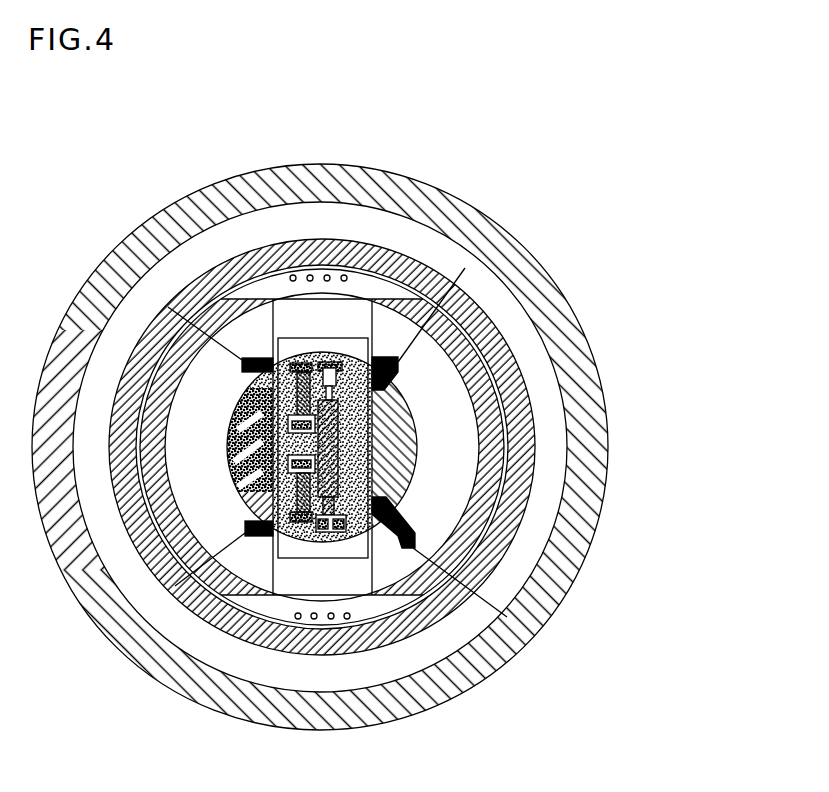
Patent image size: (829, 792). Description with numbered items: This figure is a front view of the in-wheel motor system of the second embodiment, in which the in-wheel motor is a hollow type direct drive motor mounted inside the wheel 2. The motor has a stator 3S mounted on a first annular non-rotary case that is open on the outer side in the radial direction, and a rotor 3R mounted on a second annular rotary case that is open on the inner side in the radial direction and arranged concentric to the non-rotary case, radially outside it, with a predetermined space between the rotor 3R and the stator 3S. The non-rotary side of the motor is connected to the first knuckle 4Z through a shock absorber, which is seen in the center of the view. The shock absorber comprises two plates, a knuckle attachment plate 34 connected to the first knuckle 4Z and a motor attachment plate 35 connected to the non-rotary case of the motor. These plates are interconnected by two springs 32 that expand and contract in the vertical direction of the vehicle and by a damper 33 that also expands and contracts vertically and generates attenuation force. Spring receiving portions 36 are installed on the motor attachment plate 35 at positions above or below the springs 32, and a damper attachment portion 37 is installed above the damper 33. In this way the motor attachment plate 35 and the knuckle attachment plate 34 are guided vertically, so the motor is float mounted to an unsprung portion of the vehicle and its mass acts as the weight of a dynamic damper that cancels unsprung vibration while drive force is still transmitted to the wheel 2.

The wheel 2 is at (413, 190).
The rotor 3R is at (497, 345).
The stator 3S is at (520, 405).
The springs 32 is at (290, 392).
The damper 33 is at (395, 468).
The knuckle attachment plate 34 is at (400, 597).
The motor attachment plate 35 is at (370, 612).
The spring receiving portions 36 is at (265, 362).
The damper attachment portion 37 is at (328, 365).
The first knuckle 4Z is at (372, 522).